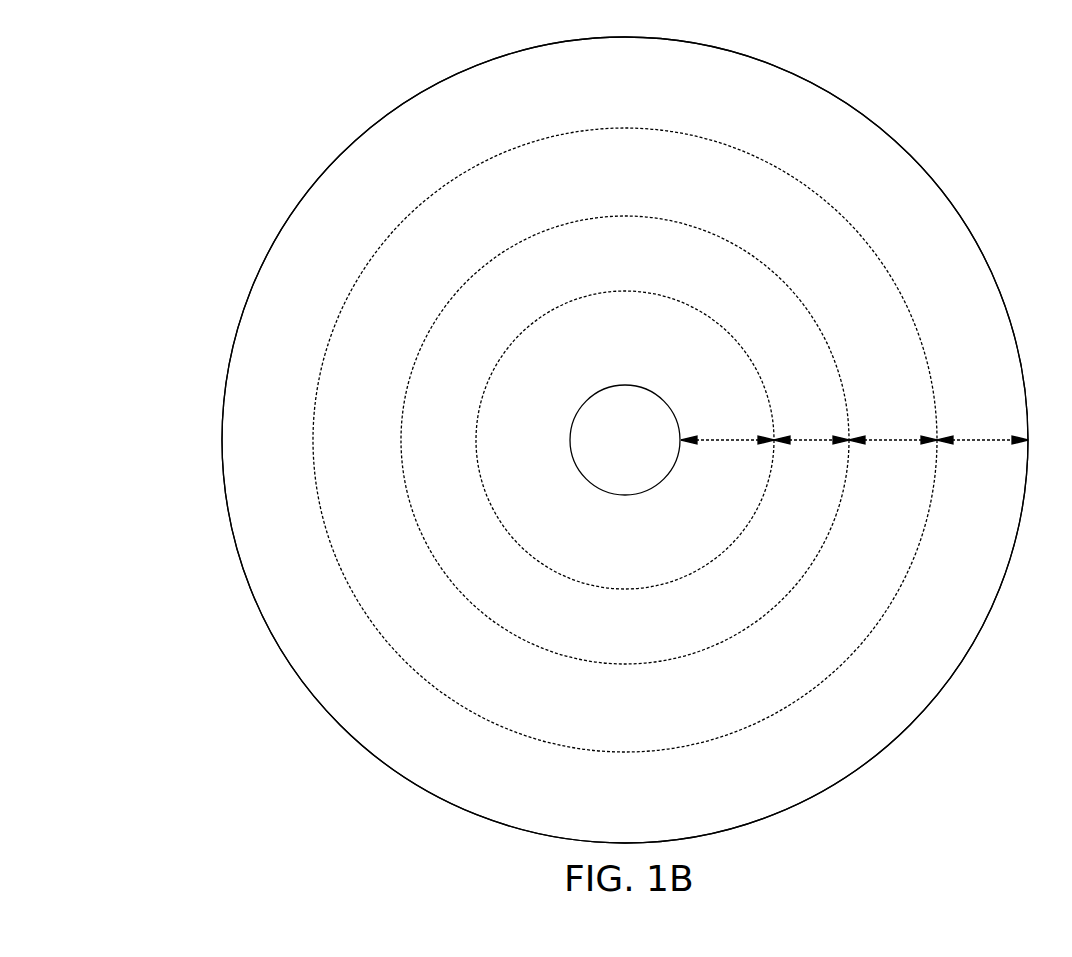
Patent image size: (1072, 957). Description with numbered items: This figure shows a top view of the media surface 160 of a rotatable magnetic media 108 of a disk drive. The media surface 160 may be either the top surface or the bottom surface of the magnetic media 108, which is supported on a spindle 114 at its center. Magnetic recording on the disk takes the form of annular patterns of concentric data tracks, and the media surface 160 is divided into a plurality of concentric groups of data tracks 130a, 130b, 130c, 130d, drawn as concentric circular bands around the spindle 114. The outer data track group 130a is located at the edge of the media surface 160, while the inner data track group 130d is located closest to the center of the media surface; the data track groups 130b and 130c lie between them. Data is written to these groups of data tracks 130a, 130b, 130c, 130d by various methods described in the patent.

The rotatable magnetic media 108 is at (242, 293).
The media surface 160 is at (947, 193).
The spindle 114 is at (644, 452).
The outer data track group 130a is at (981, 433).
The data track group 130b is at (894, 433).
The data track group 130c is at (810, 433).
The inner data track group 130d is at (725, 433).